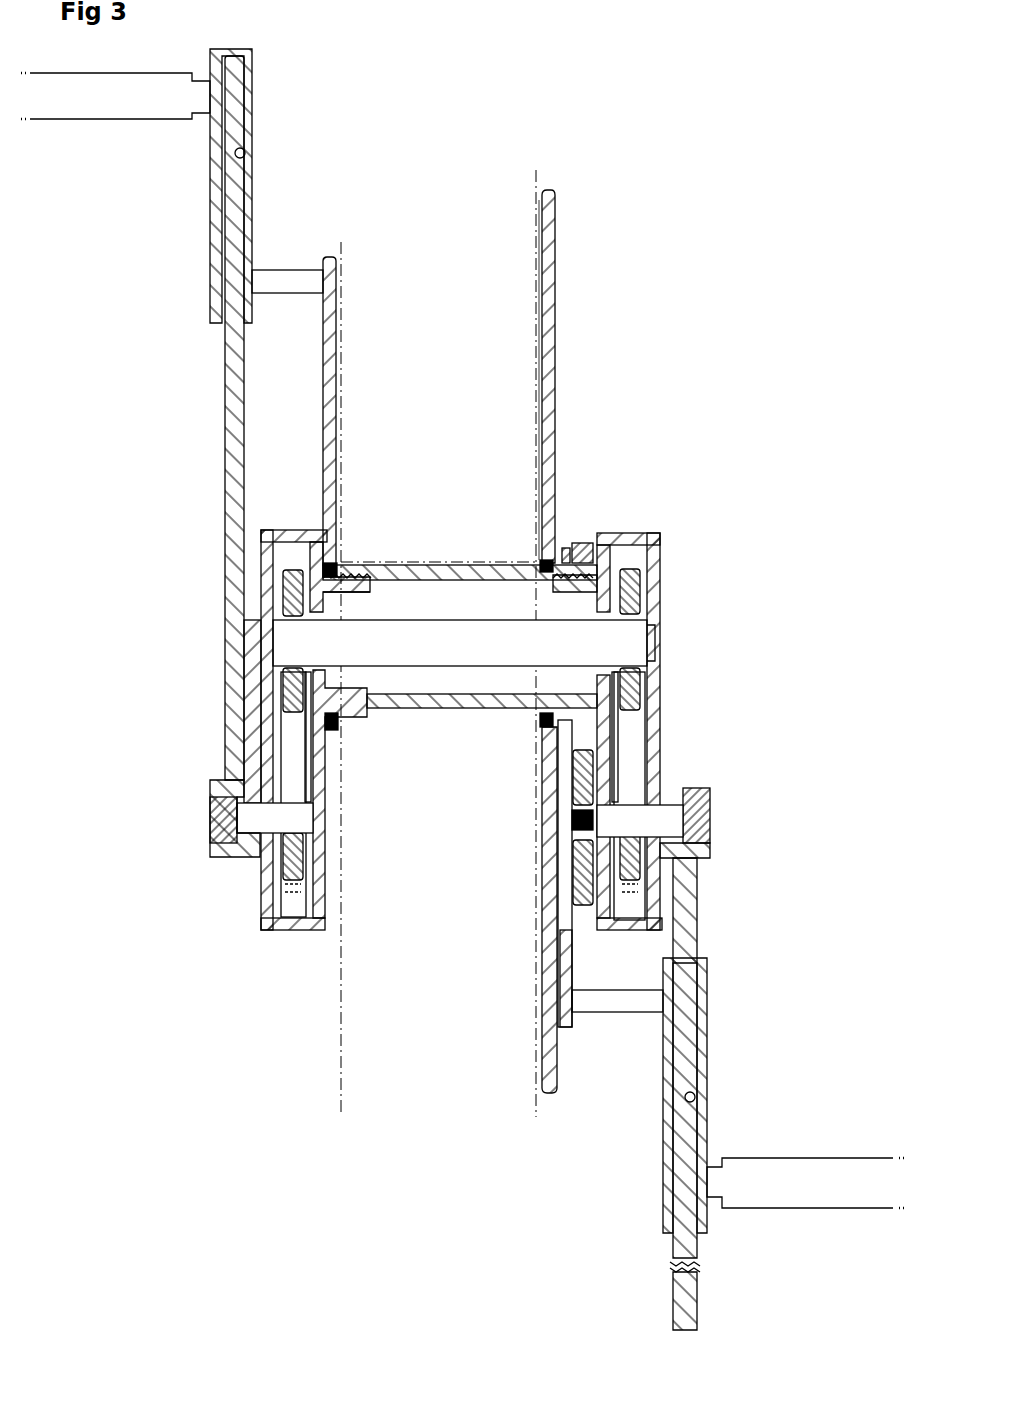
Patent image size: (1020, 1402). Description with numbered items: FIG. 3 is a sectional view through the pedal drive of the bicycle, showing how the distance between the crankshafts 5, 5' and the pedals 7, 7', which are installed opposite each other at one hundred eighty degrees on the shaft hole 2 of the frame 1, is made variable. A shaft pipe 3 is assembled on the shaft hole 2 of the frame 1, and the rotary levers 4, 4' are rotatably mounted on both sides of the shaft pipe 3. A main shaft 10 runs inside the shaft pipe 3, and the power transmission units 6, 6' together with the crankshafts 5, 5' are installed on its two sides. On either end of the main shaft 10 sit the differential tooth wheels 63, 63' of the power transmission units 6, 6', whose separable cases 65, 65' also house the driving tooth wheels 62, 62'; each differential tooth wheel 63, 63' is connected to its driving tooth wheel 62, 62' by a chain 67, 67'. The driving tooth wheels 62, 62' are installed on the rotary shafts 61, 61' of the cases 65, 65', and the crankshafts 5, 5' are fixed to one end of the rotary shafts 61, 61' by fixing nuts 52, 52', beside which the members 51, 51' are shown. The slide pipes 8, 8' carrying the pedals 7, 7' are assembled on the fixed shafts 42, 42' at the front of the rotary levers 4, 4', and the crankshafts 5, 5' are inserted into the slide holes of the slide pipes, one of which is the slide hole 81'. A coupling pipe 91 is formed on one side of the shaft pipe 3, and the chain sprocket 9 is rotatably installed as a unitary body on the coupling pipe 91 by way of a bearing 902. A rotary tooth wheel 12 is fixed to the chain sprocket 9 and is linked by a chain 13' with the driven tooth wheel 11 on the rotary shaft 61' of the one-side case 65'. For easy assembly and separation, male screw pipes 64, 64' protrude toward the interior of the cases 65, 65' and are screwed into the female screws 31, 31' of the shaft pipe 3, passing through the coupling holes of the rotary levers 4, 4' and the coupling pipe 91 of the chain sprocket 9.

The frame 1 is at (534, 383).
The shaft hole 2 is at (476, 560).
The shaft pipe 3 is at (425, 565).
The rotary lever 4 is at (351, 411).
The rotary lever 4' is at (527, 910).
The crankshaft 5 is at (209, 418).
The crankshaft 5' is at (714, 1094).
The power transmission unit 6 is at (279, 793).
The power transmission unit 6' is at (657, 680).
The pedal 7 is at (115, 127).
The pedal 7' is at (805, 1157).
The slide pipe 8 is at (202, 186).
The slide pipe 8' is at (659, 1095).
The chain sprocket 9 is at (557, 293).
The main shaft 10 is at (418, 656).
The driven tooth wheel 11 is at (580, 545).
The rotary tooth wheel 12 is at (573, 789).
The bearing 13' is at (539, 824).
The female screw 31 is at (348, 553).
The female screw 31' is at (464, 643).
The fixed shaft 42 is at (287, 252).
The fixed shaft 42' is at (617, 1032).
The nut 51 is at (193, 817).
The washer 51' is at (718, 849).
The fixing nut 52 is at (232, 851).
The fixing nut 52' is at (712, 786).
The rotary shaft 61 is at (311, 812).
The rotary shaft 61' is at (691, 816).
The driving tooth wheel 62 is at (236, 686).
The driving tooth wheel 62' is at (678, 639).
The differential tooth wheel 63 is at (292, 909).
The differential tooth wheel 63' is at (692, 880).
The male screw pipe 64 is at (369, 594).
The male screw pipe 64' is at (545, 595).
The case 65 is at (216, 730).
The case 65' is at (704, 731).
The chain 67 is at (348, 737).
The chain 67' is at (700, 728).
The slide hole 81' is at (513, 627).
The coupling pipe 91 is at (616, 561).
The bearing 902 is at (548, 723).